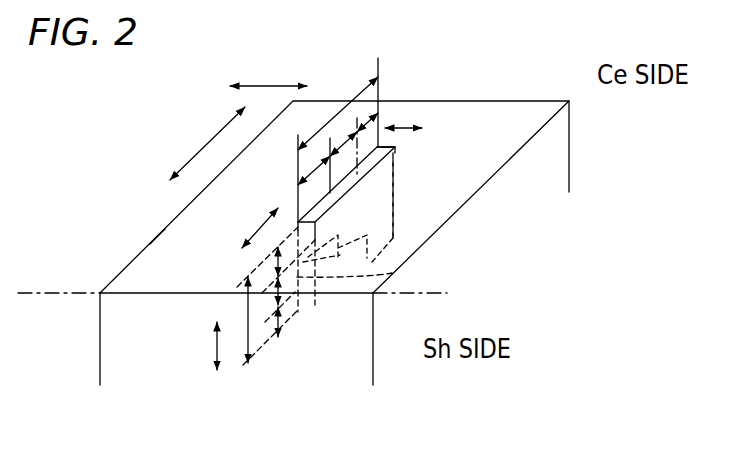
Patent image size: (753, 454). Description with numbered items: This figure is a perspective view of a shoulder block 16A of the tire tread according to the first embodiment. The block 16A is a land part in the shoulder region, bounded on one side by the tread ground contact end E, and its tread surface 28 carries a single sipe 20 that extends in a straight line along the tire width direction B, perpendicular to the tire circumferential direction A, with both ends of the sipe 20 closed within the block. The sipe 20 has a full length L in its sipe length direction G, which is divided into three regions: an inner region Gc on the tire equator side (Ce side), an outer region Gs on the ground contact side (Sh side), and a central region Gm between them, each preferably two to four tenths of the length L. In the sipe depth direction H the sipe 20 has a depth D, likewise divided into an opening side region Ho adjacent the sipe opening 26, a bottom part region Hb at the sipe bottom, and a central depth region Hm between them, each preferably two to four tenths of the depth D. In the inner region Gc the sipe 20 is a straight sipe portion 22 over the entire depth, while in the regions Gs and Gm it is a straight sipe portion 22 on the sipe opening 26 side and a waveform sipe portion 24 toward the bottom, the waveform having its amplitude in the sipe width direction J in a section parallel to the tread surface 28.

The block 16A is at (153, 242).
The sipe 20 is at (409, 166).
The straight sipe portion 22 is at (393, 205).
The waveform sipe portion 24 is at (392, 273).
The sipe opening 26 is at (396, 147).
The tread surface 28 is at (503, 118).
The tread ground contact end E is at (30, 292).
The full length of the sipe L is at (332, 119).
The outer region Gs is at (315, 169).
The central region Gm is at (343, 144).
The inner region Gc is at (367, 122).
The tire circumferential direction A is at (268, 73).
The tire width direction B is at (207, 143).
The sipe width direction J is at (403, 118).
The sipe length direction G is at (259, 228).
The sipe depth direction H is at (205, 346).
The depth of the sipe D is at (247, 328).
The opening side region Ho is at (274, 262).
The central depth region Hm is at (277, 304).
The bottom part region Hb is at (280, 326).